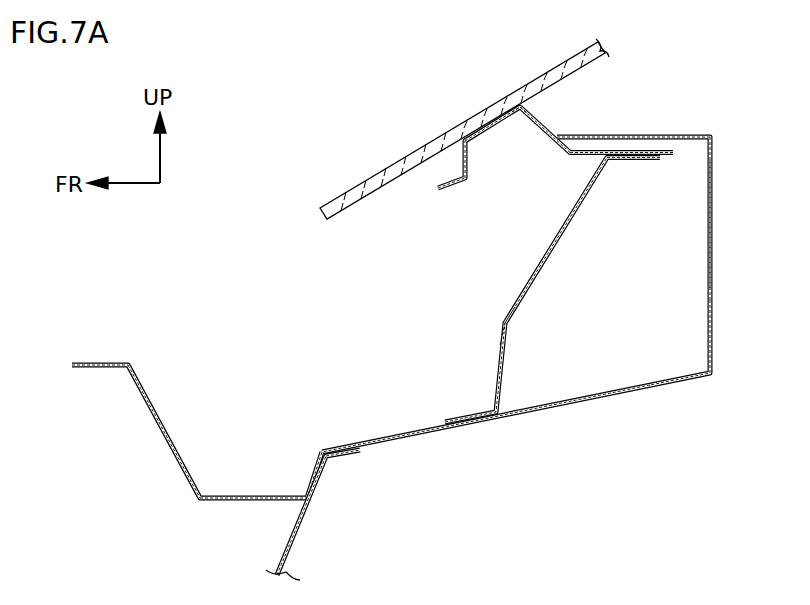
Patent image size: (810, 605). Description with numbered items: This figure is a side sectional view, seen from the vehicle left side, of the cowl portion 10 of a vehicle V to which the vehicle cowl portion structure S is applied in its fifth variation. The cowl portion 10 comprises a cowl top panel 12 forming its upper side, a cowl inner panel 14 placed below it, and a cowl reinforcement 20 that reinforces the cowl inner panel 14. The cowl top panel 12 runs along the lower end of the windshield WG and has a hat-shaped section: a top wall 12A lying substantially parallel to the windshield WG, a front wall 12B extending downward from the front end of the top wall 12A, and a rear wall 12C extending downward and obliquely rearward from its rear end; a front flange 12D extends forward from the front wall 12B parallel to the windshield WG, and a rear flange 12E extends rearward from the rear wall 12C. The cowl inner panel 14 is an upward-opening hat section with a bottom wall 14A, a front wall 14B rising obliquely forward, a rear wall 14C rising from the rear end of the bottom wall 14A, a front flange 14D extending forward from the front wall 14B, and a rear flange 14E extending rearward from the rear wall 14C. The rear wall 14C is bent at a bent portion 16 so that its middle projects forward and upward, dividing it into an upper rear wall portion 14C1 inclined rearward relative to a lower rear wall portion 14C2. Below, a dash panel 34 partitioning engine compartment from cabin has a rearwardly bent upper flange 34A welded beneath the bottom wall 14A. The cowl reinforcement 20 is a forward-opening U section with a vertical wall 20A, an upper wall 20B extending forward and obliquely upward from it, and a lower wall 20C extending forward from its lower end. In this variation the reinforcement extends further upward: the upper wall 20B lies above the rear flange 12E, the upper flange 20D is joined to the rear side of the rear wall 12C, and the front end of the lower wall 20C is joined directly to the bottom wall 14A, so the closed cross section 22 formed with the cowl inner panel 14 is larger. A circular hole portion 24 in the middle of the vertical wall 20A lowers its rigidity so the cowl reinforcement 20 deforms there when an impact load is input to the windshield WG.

The windshield WG is at (540, 72).
The vehicle V is at (306, 130).
The vehicle cowl portion structure S is at (308, 318).
The cowl portion 10 is at (300, 260).
The cowl top panel 12 is at (542, 145).
The top wall 12A is at (490, 136).
The front wall 12B is at (460, 160).
The rear wall 12C is at (524, 108).
The front flange 12D is at (440, 190).
The rear flange 12E is at (630, 150).
The cowl inner panel 14 is at (193, 403).
The bottom wall 14A is at (322, 450).
The front wall 14B is at (175, 437).
The rear wall 14C is at (499, 290).
The upper rear wall portion 14C1 is at (536, 267).
The lower rear wall portion 14C2 is at (491, 378).
The front flange 14D is at (102, 363).
The rear flange 14E is at (645, 160).
The bent portion 16 is at (500, 322).
The cowl reinforcement 20 is at (548, 280).
The vertical wall 20A is at (714, 342).
The upper wall 20B is at (685, 137).
The lower wall 20C is at (610, 398).
The upper flange 20D is at (560, 137).
The closed cross section 22 is at (633, 284).
The hole portion 24 is at (712, 200).
The dash panel 34 is at (336, 515).
The upper flange 34A is at (349, 459).